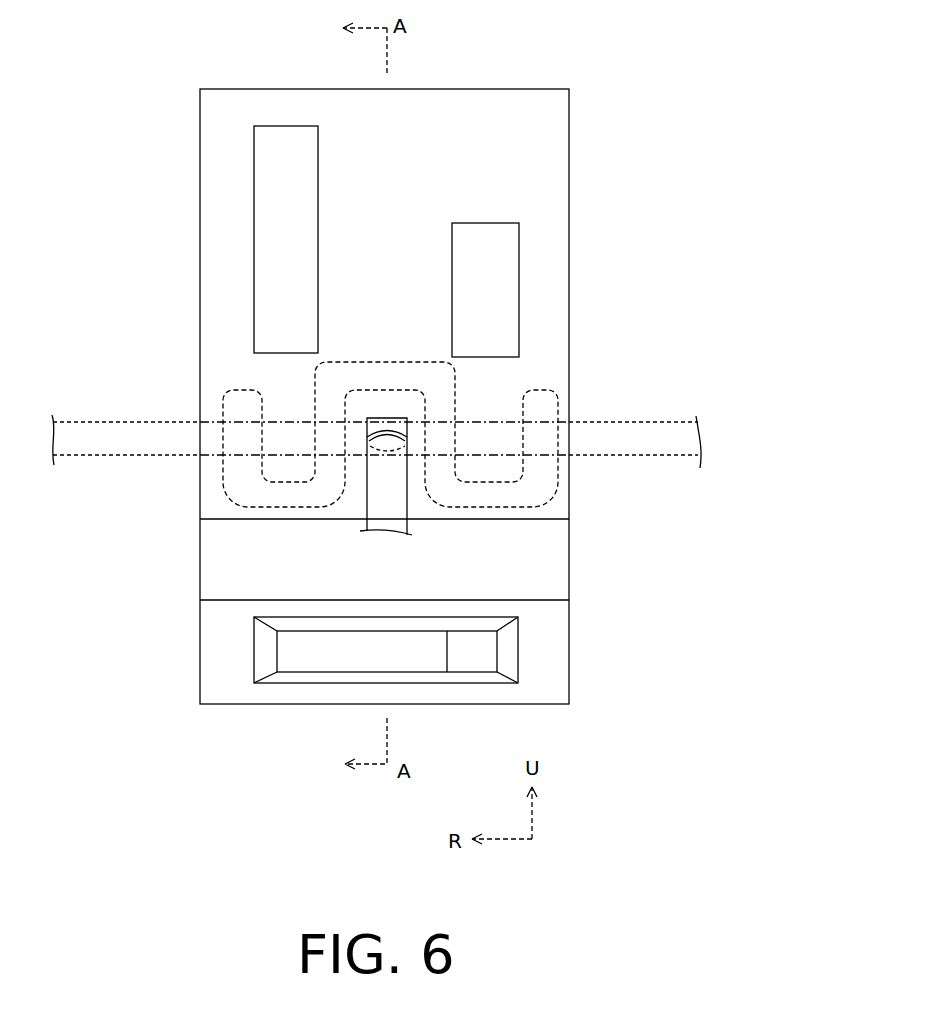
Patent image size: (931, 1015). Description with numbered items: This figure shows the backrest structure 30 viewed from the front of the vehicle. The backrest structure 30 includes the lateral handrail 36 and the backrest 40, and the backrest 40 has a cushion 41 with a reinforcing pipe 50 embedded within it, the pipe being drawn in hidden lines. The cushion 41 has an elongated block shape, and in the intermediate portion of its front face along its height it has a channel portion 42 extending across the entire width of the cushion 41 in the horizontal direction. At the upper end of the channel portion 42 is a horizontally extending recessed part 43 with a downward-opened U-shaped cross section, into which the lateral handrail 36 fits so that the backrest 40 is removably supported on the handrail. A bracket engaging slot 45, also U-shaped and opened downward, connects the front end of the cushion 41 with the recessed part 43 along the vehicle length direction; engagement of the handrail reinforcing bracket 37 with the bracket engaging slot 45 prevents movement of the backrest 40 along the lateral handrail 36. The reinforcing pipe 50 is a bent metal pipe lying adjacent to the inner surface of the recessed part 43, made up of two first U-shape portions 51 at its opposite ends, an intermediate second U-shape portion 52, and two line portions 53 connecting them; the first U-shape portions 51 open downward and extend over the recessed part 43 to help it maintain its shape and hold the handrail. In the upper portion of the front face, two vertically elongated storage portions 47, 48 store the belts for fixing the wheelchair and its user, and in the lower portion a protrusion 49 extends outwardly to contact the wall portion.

The backrest structure 30 is at (405, 389).
The lateral handrail 36 is at (652, 421).
The handrail reinforcing bracket 37 is at (378, 467).
The backrest 40 is at (569, 198).
The cushion 41 is at (484, 120).
The channel portion 42 is at (520, 557).
The recessed part 43 is at (493, 422).
The bracket engaging slot 45 is at (407, 506).
The storage portion 47 is at (254, 219).
The storage portion 48 is at (519, 257).
The protrusion 49 is at (322, 657).
The reinforcing pipe 50 is at (456, 386).
The first U-shape portion 51 is at (559, 466).
The second U-shape portion 52 is at (390, 361).
The line portion 53 is at (490, 565).